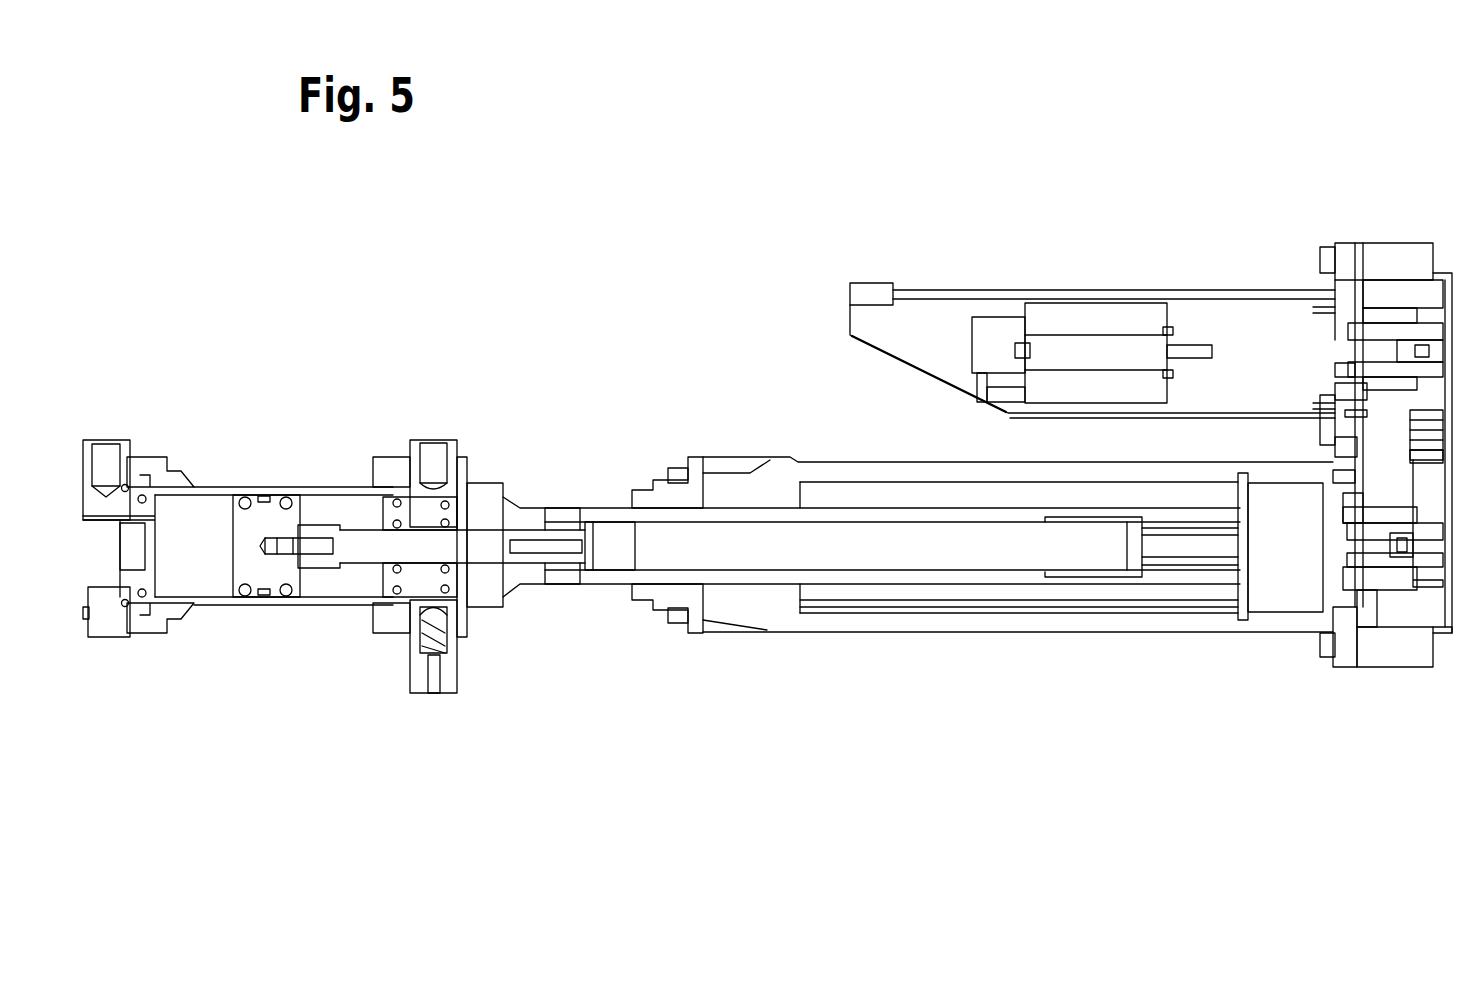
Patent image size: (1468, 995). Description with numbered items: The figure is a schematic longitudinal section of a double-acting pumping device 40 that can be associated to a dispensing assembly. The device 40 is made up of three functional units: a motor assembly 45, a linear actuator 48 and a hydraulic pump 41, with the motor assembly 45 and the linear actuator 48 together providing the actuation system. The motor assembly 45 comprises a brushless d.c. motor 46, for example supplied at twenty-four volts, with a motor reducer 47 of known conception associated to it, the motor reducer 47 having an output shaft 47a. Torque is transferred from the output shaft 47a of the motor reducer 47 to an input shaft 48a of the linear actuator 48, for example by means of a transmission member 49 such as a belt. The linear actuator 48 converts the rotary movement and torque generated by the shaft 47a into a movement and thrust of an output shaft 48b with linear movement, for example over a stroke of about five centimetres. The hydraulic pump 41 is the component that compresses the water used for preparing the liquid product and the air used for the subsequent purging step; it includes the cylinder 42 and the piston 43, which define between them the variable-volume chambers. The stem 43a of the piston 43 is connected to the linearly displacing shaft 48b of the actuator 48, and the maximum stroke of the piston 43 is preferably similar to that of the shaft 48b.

The double-acting pumping device 40 is at (766, 200).
The hydraulic pump 41 is at (387, 398).
The cylinder 42 is at (208, 620).
The piston 43 is at (220, 548).
The stem 43a is at (498, 540).
The motor assembly 45 is at (1129, 244).
The d.c. motor 46 is at (1040, 312).
The motor reducer 47 is at (1232, 318).
The output shaft 47a is at (1367, 355).
The linear actuator 48 is at (880, 440).
The input shaft 48a is at (1370, 548).
The output shaft 48b is at (650, 563).
The transmission member 49 is at (1382, 423).